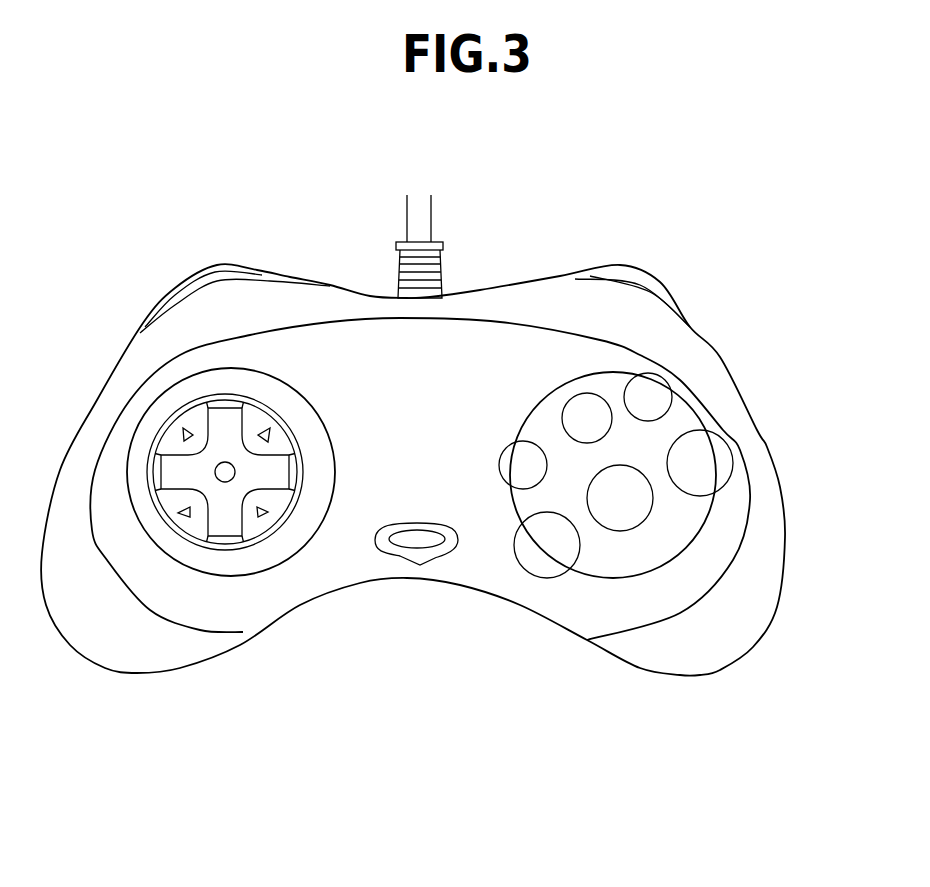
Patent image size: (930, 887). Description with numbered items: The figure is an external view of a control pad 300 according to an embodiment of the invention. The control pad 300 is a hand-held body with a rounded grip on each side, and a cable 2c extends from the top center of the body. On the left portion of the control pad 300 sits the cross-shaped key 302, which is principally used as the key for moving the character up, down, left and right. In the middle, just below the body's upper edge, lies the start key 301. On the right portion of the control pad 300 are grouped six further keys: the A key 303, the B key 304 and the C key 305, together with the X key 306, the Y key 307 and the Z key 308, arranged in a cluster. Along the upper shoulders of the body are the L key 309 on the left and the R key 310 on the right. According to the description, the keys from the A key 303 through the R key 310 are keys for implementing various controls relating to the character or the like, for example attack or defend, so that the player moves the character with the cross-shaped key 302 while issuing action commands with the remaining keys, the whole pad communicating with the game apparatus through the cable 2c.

The control pad 300 is at (822, 697).
The start key 301 is at (423, 542).
The cross-shaped key 302 is at (228, 518).
The A key 303 is at (552, 567).
The B key 304 is at (630, 517).
The C key 305 is at (727, 463).
The X key 306 is at (535, 438).
The Y key 307 is at (590, 406).
The Z key 308 is at (672, 383).
The L key 309 is at (190, 270).
The R key 310 is at (658, 277).
The cable 2c is at (408, 213).